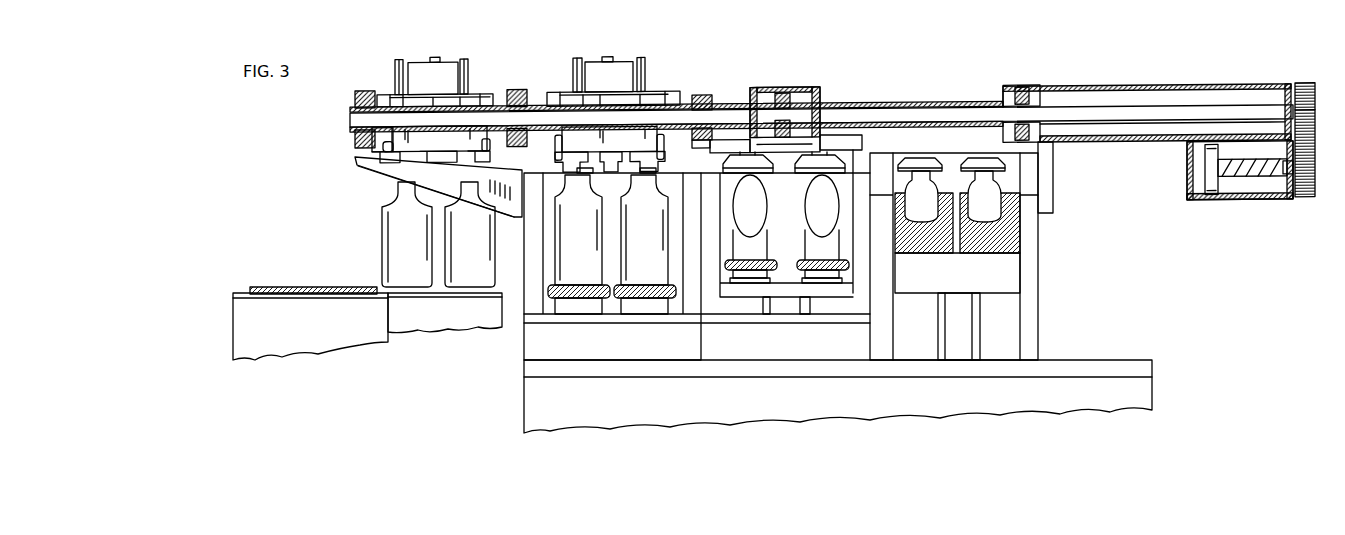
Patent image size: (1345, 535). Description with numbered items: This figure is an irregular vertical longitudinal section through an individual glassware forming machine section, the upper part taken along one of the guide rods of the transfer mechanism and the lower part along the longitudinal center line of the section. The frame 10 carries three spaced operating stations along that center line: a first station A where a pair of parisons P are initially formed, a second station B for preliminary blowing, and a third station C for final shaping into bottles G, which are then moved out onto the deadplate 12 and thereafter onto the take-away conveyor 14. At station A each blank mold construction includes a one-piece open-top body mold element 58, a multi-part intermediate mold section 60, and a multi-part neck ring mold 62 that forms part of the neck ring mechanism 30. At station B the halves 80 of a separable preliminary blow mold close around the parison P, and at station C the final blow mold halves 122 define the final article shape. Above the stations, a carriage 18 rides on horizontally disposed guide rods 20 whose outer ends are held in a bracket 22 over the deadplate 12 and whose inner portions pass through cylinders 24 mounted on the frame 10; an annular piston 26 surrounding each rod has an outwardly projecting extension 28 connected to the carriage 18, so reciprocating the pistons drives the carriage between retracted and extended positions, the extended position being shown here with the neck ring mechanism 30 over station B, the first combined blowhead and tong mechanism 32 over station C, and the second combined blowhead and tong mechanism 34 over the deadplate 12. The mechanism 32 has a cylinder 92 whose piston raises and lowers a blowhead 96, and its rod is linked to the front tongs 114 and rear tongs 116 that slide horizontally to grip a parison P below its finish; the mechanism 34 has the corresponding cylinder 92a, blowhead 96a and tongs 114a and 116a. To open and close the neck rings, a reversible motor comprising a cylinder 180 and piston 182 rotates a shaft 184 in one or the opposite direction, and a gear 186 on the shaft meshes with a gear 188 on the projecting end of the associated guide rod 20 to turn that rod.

The frame 10 is at (1110, 356).
The deadplate 12 is at (437, 325).
The take-away conveyor 14 is at (322, 330).
The carriage 18 is at (702, 86).
The guide rods 20 is at (490, 118).
The bracket 22 is at (372, 166).
The cylinders 24 is at (1098, 86).
The piston 26 is at (1030, 88).
The extension 28 is at (917, 102).
The neck ring mechanism 30 is at (796, 86).
The first combined blowhead and tong mechanism 32 is at (622, 54).
The second combined blowhead and tong mechanism 34 is at (443, 56).
The body mold element 58 is at (933, 246).
The intermediate mold section 60 is at (949, 178).
The neck ring mold 62 is at (820, 162).
The preliminary blow mold halves 80 is at (797, 203).
The cylinder 92 is at (618, 87).
The cylinder 92a is at (448, 90).
The blowhead 96 is at (620, 149).
The blowhead 96a is at (372, 146).
The tongs 114 is at (556, 160).
The tongs 114a is at (447, 143).
The tongs 116 is at (663, 152).
The tongs 116a is at (490, 150).
The final blow mold halves 122 is at (626, 191).
The cylinder 180 is at (1238, 200).
The piston 182 is at (1192, 172).
The piston rod or shaft 184 is at (1266, 182).
The gear 186 is at (1306, 200).
The gear 188 is at (1303, 83).
The first station A is at (1024, 237).
The second station B is at (843, 183).
The third station C is at (675, 187).
The bottles G is at (409, 230).
The parison P is at (753, 203).